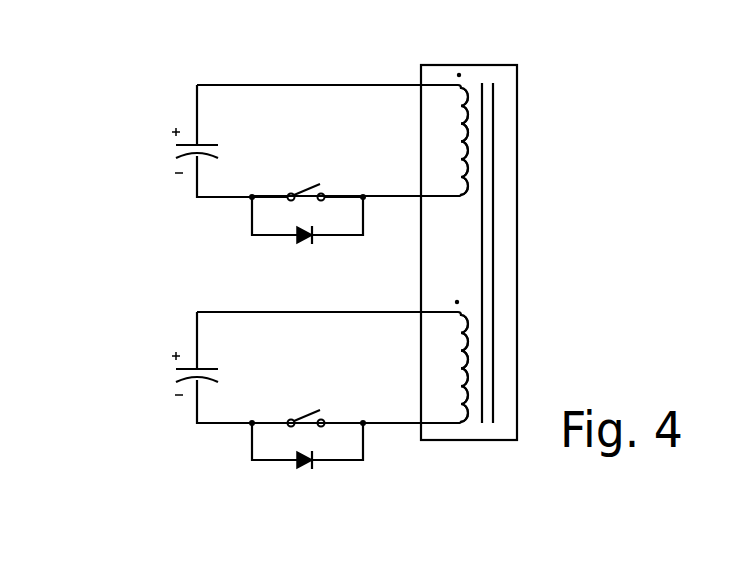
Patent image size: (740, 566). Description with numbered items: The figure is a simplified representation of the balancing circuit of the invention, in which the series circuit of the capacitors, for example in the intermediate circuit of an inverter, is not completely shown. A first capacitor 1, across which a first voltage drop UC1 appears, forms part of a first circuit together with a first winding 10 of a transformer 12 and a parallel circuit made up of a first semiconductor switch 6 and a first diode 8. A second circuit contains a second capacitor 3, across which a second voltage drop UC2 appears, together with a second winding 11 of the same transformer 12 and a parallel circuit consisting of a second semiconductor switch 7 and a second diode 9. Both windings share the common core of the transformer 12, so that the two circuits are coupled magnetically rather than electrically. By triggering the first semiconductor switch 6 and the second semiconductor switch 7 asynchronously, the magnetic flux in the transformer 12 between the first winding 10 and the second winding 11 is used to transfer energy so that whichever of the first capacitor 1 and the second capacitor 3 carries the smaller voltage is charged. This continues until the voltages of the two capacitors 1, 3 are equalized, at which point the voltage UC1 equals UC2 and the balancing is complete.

The first capacitor 1 is at (170, 141).
The second capacitor 3 is at (170, 365).
The first semiconductor switch 6 is at (320, 185).
The second semiconductor switch 7 is at (318, 408).
The first diode 8 is at (317, 240).
The second diode 9 is at (313, 463).
The first winding 10 is at (468, 130).
The second winding 11 is at (470, 363).
The transformer 12 is at (507, 238).